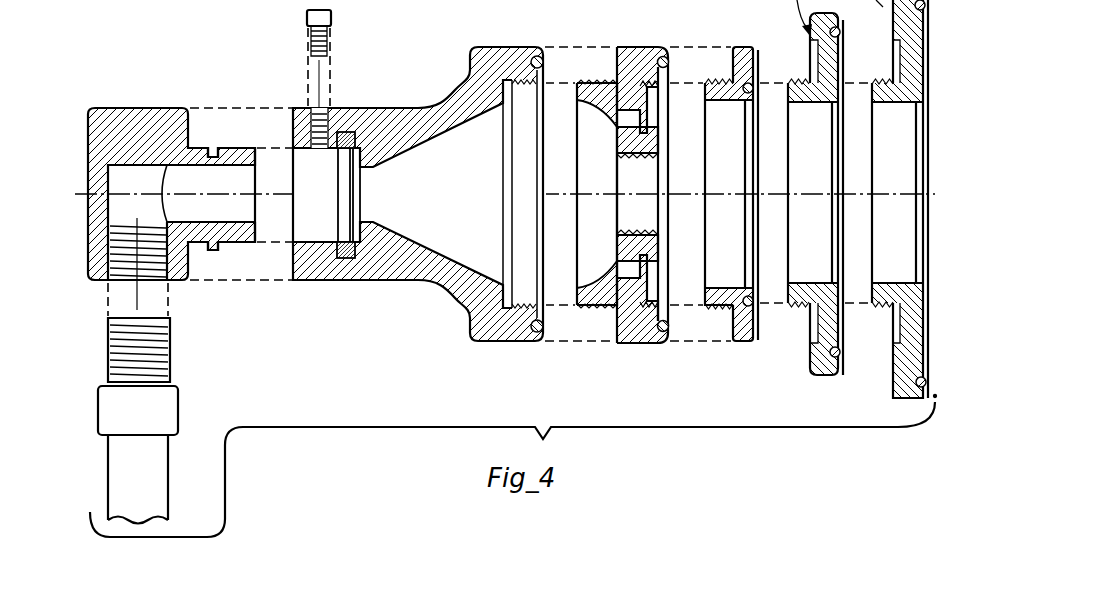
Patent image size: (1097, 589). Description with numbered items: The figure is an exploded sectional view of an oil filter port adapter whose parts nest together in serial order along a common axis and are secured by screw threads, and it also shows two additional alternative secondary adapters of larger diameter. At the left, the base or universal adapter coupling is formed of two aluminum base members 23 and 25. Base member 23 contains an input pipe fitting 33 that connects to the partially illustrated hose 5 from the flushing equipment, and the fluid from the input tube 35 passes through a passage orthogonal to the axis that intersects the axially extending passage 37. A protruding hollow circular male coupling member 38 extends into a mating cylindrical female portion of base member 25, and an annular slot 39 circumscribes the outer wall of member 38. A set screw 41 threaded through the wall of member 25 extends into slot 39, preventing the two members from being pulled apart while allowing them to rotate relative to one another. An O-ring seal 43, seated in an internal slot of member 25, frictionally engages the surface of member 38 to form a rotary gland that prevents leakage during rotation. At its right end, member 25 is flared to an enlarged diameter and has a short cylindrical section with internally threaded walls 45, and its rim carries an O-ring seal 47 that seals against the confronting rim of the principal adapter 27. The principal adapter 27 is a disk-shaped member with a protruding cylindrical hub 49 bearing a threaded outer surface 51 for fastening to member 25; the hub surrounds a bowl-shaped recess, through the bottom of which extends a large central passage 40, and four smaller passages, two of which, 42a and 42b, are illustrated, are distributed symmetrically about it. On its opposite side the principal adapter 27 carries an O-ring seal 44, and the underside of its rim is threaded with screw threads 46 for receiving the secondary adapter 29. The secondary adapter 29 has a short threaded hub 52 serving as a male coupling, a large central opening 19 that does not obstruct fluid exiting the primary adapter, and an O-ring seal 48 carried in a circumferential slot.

The base member 23 is at (162, 100).
The input tube 35 is at (148, 195).
The axially extending passage 37 is at (226, 213).
The male coupling member 38 is at (248, 170).
The annular slot 39 is at (213, 246).
The input pipe fitting 33 is at (168, 284).
The hose 5 is at (170, 472).
The set screw 41 is at (328, 34).
The base member 25 is at (425, 108).
The O-ring seal 43 is at (337, 163).
The internally threaded internal walls 45 is at (506, 104).
The O-ring seal 47 is at (543, 337).
The threaded outer surface 51 is at (574, 86).
The axially extending passage 42a is at (611, 88).
The axially extending passage 42b is at (614, 278).
The principal adapter 27 is at (653, 42).
The central passage 40 is at (636, 150).
The cylindrical hub 49 is at (574, 283).
The screw threads 46 is at (666, 88).
The O-ring seal 44 is at (670, 330).
The secondary adapter 29 is at (753, 42).
The hub 52 is at (720, 82).
The central opening 19 is at (720, 287).
The O-ring seal 48 is at (756, 302).